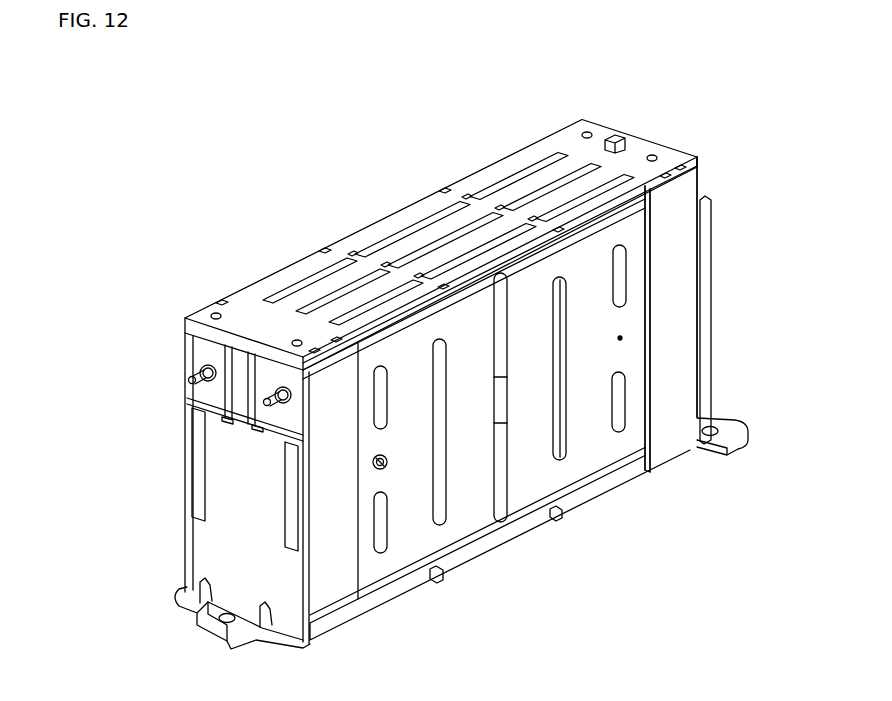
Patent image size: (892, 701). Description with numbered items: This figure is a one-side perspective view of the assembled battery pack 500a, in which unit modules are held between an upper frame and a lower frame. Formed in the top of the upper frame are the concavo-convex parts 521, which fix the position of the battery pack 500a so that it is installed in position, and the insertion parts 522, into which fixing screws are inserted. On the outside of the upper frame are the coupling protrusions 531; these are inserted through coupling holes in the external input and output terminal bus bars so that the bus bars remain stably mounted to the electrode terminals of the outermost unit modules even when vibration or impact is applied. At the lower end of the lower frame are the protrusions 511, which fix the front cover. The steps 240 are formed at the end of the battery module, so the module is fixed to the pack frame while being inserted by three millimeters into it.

The assembled battery pack 500a is at (111, 105).
The insertion parts 522 is at (592, 134).
The steps 240 is at (630, 208).
The concavo-convex parts 521 is at (214, 315).
The coupling protrusions 531 is at (194, 375).
The protrusions 511 is at (186, 572).